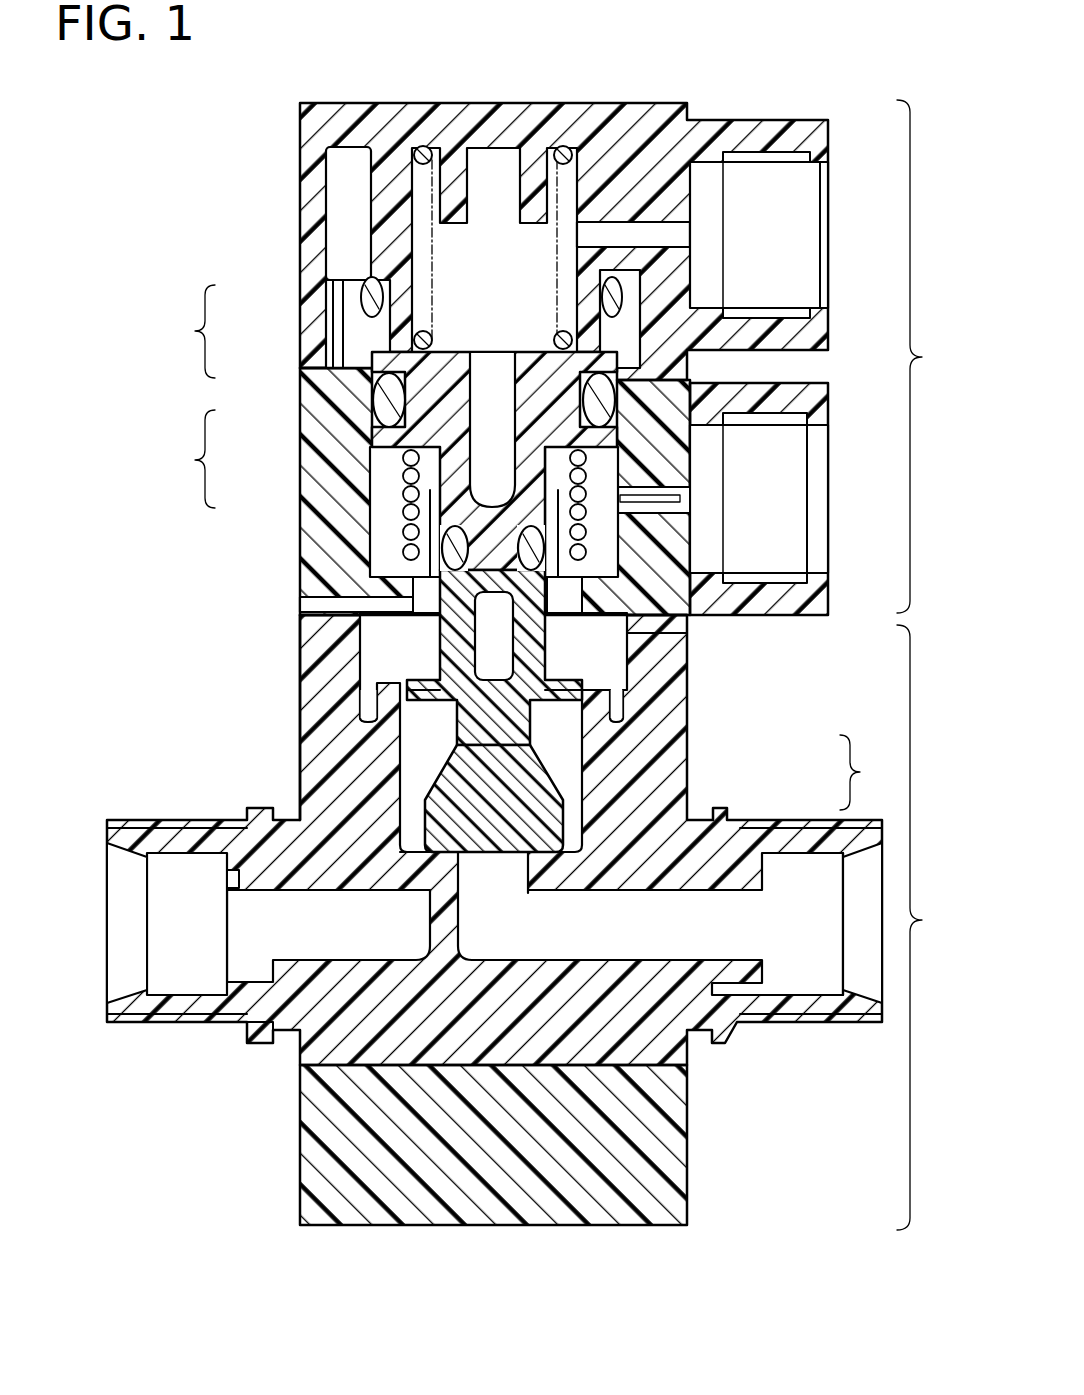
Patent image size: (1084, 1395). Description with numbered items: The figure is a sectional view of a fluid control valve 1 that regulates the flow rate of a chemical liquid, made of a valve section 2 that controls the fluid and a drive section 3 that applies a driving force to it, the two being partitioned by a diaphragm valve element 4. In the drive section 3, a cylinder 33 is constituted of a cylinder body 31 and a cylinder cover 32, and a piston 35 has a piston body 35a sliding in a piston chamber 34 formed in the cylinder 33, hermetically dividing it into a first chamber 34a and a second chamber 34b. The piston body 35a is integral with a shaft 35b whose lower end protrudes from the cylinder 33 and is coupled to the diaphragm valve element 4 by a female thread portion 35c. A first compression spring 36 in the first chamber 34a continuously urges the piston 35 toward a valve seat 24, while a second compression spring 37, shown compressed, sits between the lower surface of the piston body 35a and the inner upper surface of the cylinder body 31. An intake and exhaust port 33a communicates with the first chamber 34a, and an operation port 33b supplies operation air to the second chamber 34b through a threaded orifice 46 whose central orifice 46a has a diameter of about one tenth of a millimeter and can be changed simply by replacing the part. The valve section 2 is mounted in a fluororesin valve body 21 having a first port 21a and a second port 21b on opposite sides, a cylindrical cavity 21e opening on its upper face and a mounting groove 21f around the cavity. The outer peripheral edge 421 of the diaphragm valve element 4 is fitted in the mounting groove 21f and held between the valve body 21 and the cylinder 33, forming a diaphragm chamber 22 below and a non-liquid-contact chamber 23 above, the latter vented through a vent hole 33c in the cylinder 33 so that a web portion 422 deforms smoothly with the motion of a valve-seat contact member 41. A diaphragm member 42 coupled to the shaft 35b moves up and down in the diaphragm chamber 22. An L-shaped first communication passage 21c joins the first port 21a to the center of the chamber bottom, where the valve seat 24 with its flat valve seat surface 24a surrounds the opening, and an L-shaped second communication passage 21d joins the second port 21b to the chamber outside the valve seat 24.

The fluid control valve 1 is at (776, 50).
The valve section 2 is at (526, 922).
The drive section 3 is at (623, 357).
The diaphragm valve element 4 is at (859, 772).
The valve body 21 is at (690, 1048).
The first port 21a is at (813, 968).
The second port 21b is at (182, 963).
The first communication passage 21c is at (597, 930).
The second communication passage 21d is at (247, 1020).
The cylindrical cavity 21e is at (300, 753).
The mounting groove 21f is at (363, 682).
The diaphragm chamber 22 is at (402, 750).
The non-liquid-contact chamber 23 is at (622, 607).
The valve seat 24 is at (443, 857).
The valve seat surface 24a is at (390, 855).
The cylinder body 31 is at (355, 340).
The cylinder cover 32 is at (300, 292).
The cylinder 33 is at (492, 241).
The intake and exhaust port 33a is at (797, 236).
The operation port 33b is at (797, 455).
The vent hole 33c is at (308, 607).
The piston chamber 34 is at (299, 493).
The first chamber 34a is at (376, 402).
The second chamber 34b is at (378, 488).
The piston 35 is at (468, 338).
The piston body 35a is at (528, 350).
The shaft 35b is at (505, 540).
The female thread portion 35c is at (455, 622).
The first compression spring 36 is at (562, 148).
The second compression spring 37 is at (630, 403).
The valve-seat contact member 41 is at (470, 790).
The diaphragm member 42 is at (520, 762).
The outer peripheral edge 421 is at (576, 700).
The web portion 422 is at (562, 712).
The threaded orifice 46 is at (688, 500).
The orifice 46a is at (690, 518).